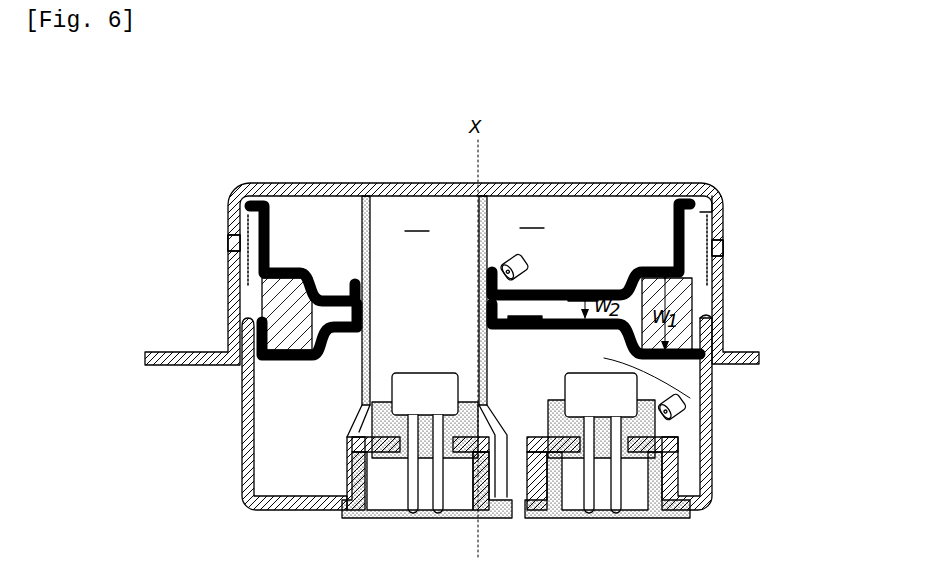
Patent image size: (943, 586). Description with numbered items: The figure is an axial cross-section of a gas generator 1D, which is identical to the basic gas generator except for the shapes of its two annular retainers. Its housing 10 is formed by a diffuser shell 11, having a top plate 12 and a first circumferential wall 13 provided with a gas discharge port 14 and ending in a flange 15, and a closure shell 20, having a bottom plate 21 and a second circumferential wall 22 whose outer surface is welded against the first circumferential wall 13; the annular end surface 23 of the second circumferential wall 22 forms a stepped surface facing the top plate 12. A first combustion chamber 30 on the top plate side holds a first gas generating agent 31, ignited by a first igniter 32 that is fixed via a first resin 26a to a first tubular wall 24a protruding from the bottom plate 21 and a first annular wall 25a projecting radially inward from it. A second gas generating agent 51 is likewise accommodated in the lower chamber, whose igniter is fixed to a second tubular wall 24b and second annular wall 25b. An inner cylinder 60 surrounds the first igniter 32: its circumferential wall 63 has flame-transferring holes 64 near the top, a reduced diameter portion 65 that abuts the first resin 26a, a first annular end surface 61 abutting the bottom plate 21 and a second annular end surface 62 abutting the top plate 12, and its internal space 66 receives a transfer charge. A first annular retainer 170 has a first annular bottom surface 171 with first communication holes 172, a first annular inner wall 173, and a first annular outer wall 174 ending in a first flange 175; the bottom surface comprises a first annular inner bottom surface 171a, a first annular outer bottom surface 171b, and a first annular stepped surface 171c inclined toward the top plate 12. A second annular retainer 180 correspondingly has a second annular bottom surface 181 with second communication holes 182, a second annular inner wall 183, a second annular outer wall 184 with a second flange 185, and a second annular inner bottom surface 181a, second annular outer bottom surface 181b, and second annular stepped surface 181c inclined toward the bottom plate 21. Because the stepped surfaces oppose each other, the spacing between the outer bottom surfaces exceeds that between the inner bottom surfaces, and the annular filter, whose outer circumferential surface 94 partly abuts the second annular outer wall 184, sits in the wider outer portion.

The gas generator 1D is at (540, 180).
The housing 10 is at (66, 268).
The diffuser shell 11 is at (228, 292).
The top plate 12 is at (300, 184).
The first circumferential wall 13 is at (724, 292).
The gas discharge port 14 is at (726, 256).
The flange 15 is at (158, 350).
The closure shell 20 is at (240, 380).
The bottom plate 21 is at (283, 508).
The second circumferential wall 22 is at (241, 452).
The annular end surface 23 is at (718, 318).
The first tubular wall 24a is at (345, 470).
The second tubular wall 24b is at (712, 505).
The first annular wall 25a is at (356, 432).
The second annular wall 25b is at (712, 458).
The first resin 26a is at (362, 408).
The first combustion chamber 30 is at (532, 218).
The first gas generating agent 31 is at (513, 258).
The first igniter 32 is at (431, 370).
The second gas generating agent 51 is at (672, 415).
The inner cylinder 60 is at (476, 300).
The first annular end surface 61 is at (348, 512).
The second annular end surface 62 is at (366, 183).
The circumferential wall 63 is at (356, 366).
The flame-transferring holes 64 is at (360, 218).
The reduced diameter portion 65 is at (490, 408).
The internal space 66 is at (417, 221).
The outer circumferential surface 94 is at (708, 305).
The first annular retainer 170 is at (292, 264).
The first annular bottom surface 171 is at (585, 289).
The first annular inner bottom surface 171a is at (612, 291).
The first annular outer bottom surface 171b is at (634, 270).
The first annular stepped surface 171c is at (624, 276).
The first communication holes 172 is at (572, 295).
The first annular inner wall 173 is at (487, 279).
The first annular outer wall 174 is at (718, 210).
The first flange 175 is at (688, 184).
The second annular retainer 180 is at (284, 362).
The second annular bottom surface 181 is at (773, 372).
The second annular inner bottom surface 181a is at (690, 398).
The second annular outer bottom surface 181b is at (704, 372).
The second annular stepped surface 181c is at (700, 386).
The second communication holes 182 is at (522, 330).
The second annular inner wall 183 is at (364, 318).
The second annular outer wall 184 is at (242, 405).
The second flange 185 is at (228, 312).